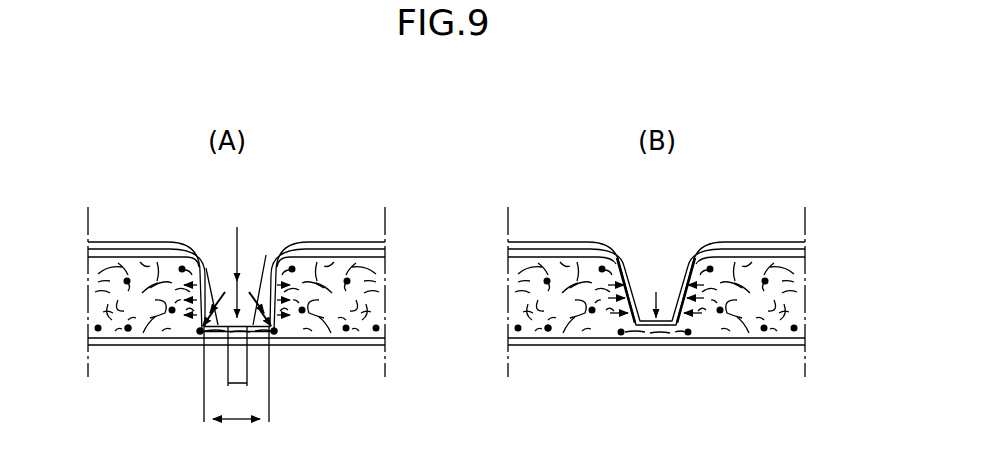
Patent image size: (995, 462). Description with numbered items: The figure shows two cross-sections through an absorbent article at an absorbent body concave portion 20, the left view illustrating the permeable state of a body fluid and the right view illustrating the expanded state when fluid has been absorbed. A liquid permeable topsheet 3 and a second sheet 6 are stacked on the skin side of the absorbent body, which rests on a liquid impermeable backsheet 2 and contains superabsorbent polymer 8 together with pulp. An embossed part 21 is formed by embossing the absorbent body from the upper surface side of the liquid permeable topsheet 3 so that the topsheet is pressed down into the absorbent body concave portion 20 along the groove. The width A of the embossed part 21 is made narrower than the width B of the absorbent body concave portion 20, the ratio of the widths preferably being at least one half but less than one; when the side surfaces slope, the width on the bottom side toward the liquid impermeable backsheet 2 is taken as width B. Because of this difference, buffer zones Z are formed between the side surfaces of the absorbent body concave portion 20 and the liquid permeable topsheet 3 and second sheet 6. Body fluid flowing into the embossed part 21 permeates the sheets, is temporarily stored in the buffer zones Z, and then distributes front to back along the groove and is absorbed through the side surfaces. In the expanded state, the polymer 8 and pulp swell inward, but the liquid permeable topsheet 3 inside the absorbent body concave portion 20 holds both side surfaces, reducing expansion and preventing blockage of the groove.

The liquid impermeable backsheet 2 is at (337, 345).
The liquid permeable topsheet 3 is at (141, 242).
The second sheet 6 is at (350, 245).
The polymer 8 is at (129, 333).
The absorbent body concave portion 20 is at (206, 268).
The embossed part 21 is at (234, 316).
The buffer zone Z is at (200, 335).
The width of the embossed part A is at (237, 356).
The width of the absorbent body concave portion B is at (236, 374).